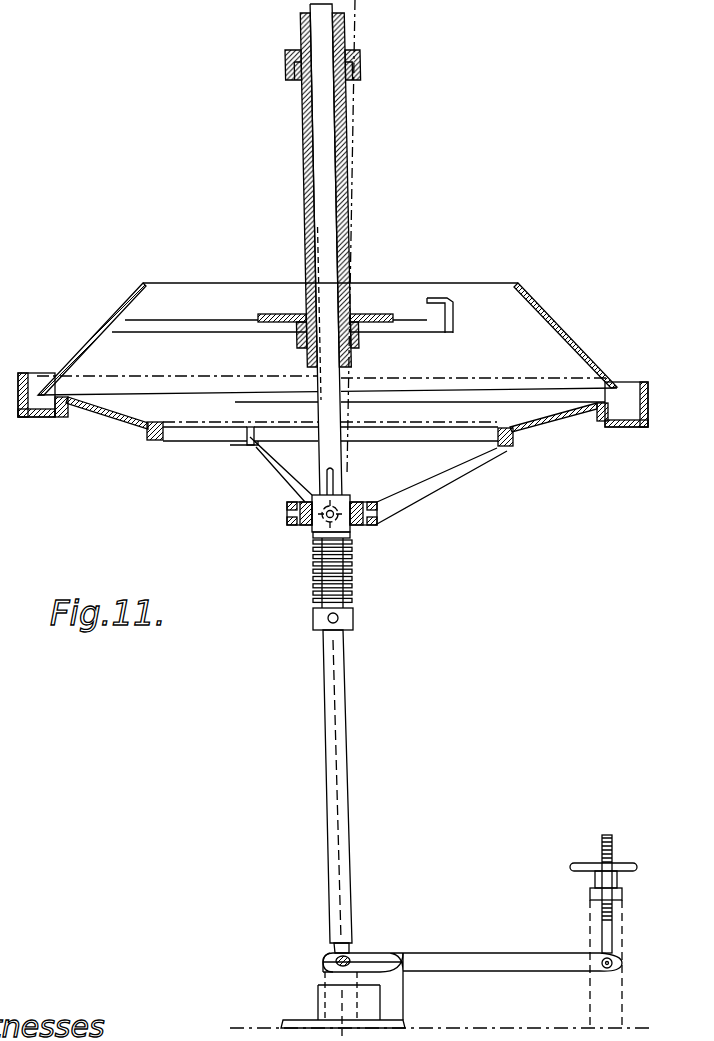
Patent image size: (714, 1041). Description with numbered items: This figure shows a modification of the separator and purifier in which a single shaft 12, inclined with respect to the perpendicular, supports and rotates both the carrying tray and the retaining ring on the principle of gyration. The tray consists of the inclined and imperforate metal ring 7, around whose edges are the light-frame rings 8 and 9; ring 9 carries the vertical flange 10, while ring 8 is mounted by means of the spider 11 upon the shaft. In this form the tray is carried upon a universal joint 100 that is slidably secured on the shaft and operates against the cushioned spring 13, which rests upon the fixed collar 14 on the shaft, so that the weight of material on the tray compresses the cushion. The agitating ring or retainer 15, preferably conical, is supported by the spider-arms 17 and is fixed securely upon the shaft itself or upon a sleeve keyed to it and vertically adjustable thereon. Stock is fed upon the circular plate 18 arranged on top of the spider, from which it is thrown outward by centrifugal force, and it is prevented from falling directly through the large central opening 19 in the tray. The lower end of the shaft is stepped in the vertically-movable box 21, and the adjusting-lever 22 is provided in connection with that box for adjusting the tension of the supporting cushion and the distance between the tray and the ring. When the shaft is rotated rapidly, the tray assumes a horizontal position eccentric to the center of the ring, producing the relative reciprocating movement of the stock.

The inclined imperforate metal ring 7 is at (550, 421).
The light-frame ring 8 is at (147, 437).
The light-frame ring 9 is at (60, 420).
The vertical flange 10 is at (648, 406).
The spider 11 is at (440, 480).
The shaft 12 is at (357, 657).
The spring or cushion 13 is at (352, 571).
The fixed collar 14 is at (353, 618).
The agitating ring or retainer 15 is at (562, 331).
The spider-arms 17 is at (173, 328).
The circular plate 18 is at (370, 319).
The central opening 19 is at (195, 427).
The vertically-movable box 21 is at (336, 978).
The adjusting-lever 22 is at (470, 953).
The universal joint 100 is at (352, 526).